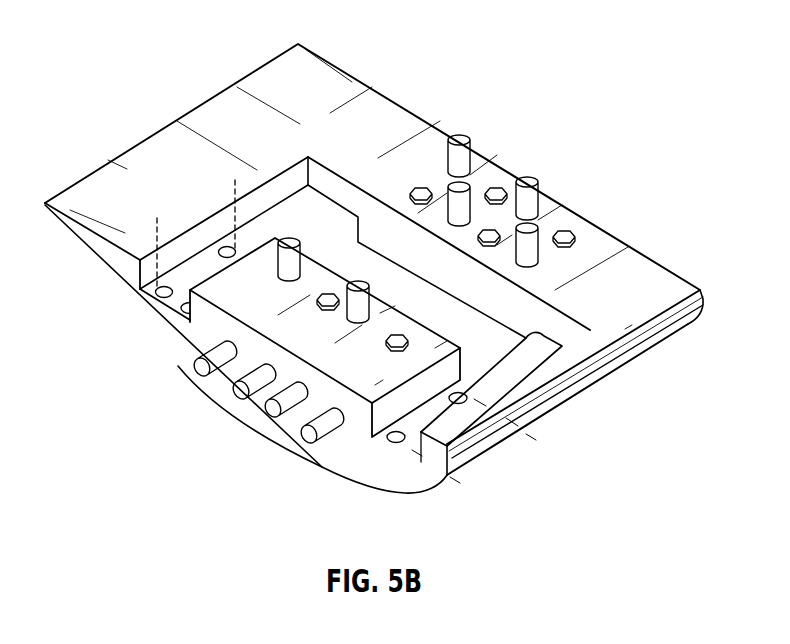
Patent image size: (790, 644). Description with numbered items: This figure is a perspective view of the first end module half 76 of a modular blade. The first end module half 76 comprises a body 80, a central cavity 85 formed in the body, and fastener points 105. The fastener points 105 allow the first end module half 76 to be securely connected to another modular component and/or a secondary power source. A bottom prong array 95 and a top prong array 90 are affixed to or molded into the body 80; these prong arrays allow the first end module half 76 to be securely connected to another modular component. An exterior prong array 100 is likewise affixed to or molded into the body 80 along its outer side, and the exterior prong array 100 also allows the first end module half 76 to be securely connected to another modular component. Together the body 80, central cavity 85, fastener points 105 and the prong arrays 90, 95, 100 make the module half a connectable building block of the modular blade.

The first end module half 76 is at (139, 84).
The body 80 is at (101, 181).
The central cavity 85 is at (358, 269).
The top prong array 90 is at (452, 129).
The bottom prong array 95 is at (366, 326).
The exterior prong array 100 is at (243, 423).
The fastener points 105 is at (235, 178).